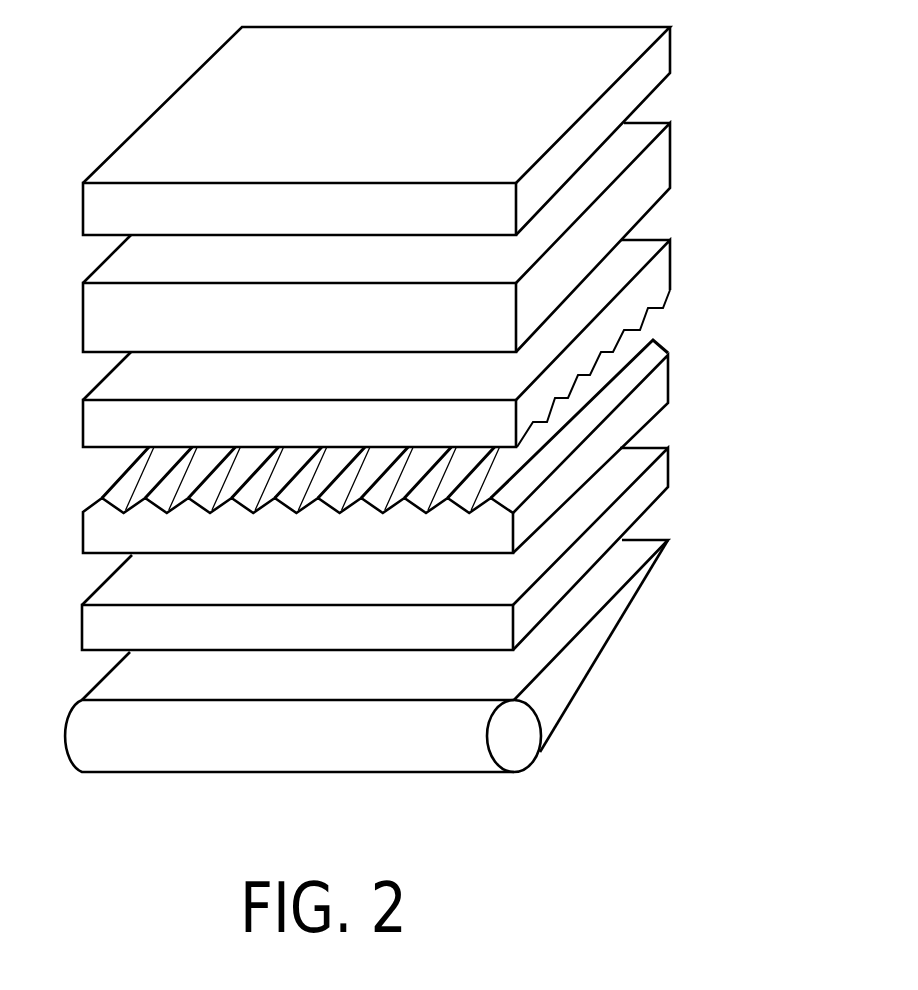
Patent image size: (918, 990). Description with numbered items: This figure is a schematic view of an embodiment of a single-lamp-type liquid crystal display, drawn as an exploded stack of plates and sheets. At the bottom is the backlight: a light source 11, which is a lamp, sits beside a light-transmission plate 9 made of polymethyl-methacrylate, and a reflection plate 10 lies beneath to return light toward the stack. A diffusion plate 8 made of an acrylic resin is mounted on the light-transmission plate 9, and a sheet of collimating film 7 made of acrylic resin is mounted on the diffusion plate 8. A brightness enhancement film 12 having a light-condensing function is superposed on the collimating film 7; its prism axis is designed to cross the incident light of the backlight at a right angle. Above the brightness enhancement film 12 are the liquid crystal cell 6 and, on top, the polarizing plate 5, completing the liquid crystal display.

The polarizing plate 5 is at (670, 57).
The liquid crystal cell 6 is at (670, 157).
The brightness enhancement film 12 is at (670, 287).
The collimating film 7 is at (668, 378).
The diffusion plate 8 is at (668, 483).
The light-transmission plate 9 is at (605, 635).
The reflection plate 10 is at (597, 680).
The light source 11 is at (512, 755).